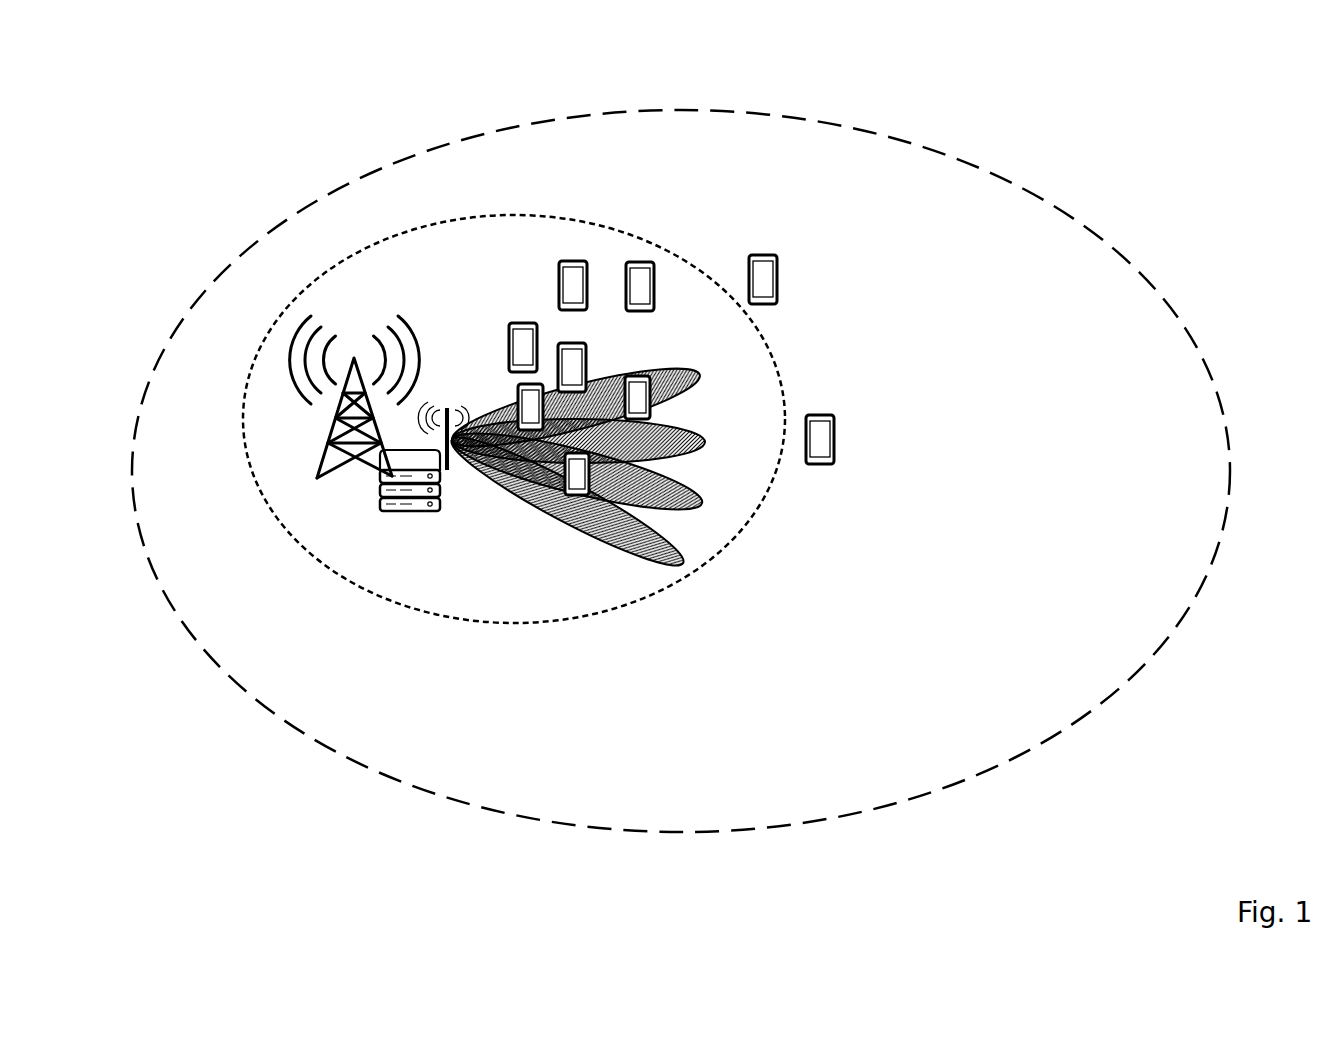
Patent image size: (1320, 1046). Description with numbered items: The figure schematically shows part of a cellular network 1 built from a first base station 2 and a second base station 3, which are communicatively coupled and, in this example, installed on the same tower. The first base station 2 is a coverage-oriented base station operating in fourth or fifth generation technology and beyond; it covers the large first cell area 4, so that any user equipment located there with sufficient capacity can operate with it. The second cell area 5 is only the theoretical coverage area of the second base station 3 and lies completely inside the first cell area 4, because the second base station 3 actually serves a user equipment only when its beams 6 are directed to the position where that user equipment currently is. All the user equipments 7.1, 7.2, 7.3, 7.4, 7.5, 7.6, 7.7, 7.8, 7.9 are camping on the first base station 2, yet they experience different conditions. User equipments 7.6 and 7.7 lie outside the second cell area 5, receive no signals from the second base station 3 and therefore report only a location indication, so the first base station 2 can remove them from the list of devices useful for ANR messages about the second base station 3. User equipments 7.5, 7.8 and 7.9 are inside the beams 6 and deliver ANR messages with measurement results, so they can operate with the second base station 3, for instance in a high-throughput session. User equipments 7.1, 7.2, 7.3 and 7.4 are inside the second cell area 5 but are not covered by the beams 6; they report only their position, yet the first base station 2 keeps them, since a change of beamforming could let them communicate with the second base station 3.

The cellular network 1 is at (168, 211).
The first base station 2 is at (348, 468).
The second base station 3 is at (450, 488).
The first cell area 4 is at (390, 710).
The second cell area 5 is at (447, 270).
The beams 6 is at (680, 373).
The user equipment 7.1 is at (504, 347).
The user equipment 7.2 is at (553, 285).
The user equipment 7.3 is at (661, 286).
The user equipment 7.4 is at (594, 367).
The user equipment 7.5 is at (517, 410).
The user equipment 7.6 is at (784, 279).
The user equipment 7.7 is at (843, 439).
The user equipment 7.8 is at (641, 392).
The user equipment 7.9 is at (583, 487).